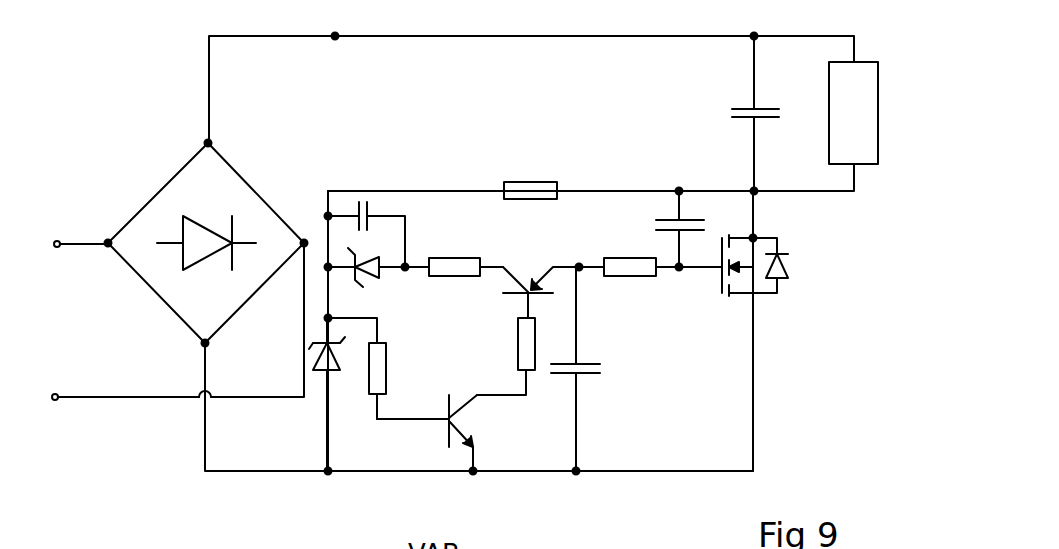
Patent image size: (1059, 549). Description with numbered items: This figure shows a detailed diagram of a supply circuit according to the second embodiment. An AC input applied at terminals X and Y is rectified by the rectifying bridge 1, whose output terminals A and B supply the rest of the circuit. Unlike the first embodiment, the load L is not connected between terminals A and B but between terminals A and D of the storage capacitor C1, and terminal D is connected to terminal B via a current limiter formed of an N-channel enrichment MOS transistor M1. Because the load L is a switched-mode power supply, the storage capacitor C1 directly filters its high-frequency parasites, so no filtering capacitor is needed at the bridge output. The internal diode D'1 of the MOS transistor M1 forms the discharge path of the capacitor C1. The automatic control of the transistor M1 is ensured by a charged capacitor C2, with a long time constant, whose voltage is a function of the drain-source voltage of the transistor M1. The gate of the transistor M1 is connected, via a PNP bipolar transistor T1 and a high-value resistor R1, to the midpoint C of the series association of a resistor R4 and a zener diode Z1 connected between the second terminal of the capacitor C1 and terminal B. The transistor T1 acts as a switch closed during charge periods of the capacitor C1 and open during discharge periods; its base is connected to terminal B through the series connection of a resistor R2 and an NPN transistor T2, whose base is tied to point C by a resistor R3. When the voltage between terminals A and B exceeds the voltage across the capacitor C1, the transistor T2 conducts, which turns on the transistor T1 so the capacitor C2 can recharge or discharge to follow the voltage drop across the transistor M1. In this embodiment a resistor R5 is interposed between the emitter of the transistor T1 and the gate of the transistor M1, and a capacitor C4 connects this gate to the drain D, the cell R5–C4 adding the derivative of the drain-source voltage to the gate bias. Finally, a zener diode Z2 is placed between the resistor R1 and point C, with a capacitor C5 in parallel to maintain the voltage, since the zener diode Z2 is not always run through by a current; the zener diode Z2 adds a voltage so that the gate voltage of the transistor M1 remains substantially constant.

The rectifying bridge 1 is at (150, 168).
The input terminal X is at (77, 230).
The input terminal Y is at (72, 382).
The output terminal A is at (335, 22).
The terminal B is at (330, 486).
The midpoint C is at (320, 267).
The terminal D is at (728, 168).
The storage capacitor C1 is at (731, 112).
The capacitor C2 is at (585, 371).
The capacitor C4 is at (671, 229).
The capacitor C5 is at (367, 236).
The resistor R1 is at (454, 255).
The resistor R2 is at (506, 356).
The resistor R3 is at (374, 367).
The resistor R4 is at (503, 176).
The resistor R5 is at (650, 253).
The bipolar transistor T1 is at (543, 281).
The NPN transistor T2 is at (441, 435).
The zener diode Z1 is at (336, 394).
The zener diode Z2 is at (376, 280).
The internal diode D'1 is at (802, 265).
The MOS transistor M1 is at (781, 306).
The load L is at (880, 105).